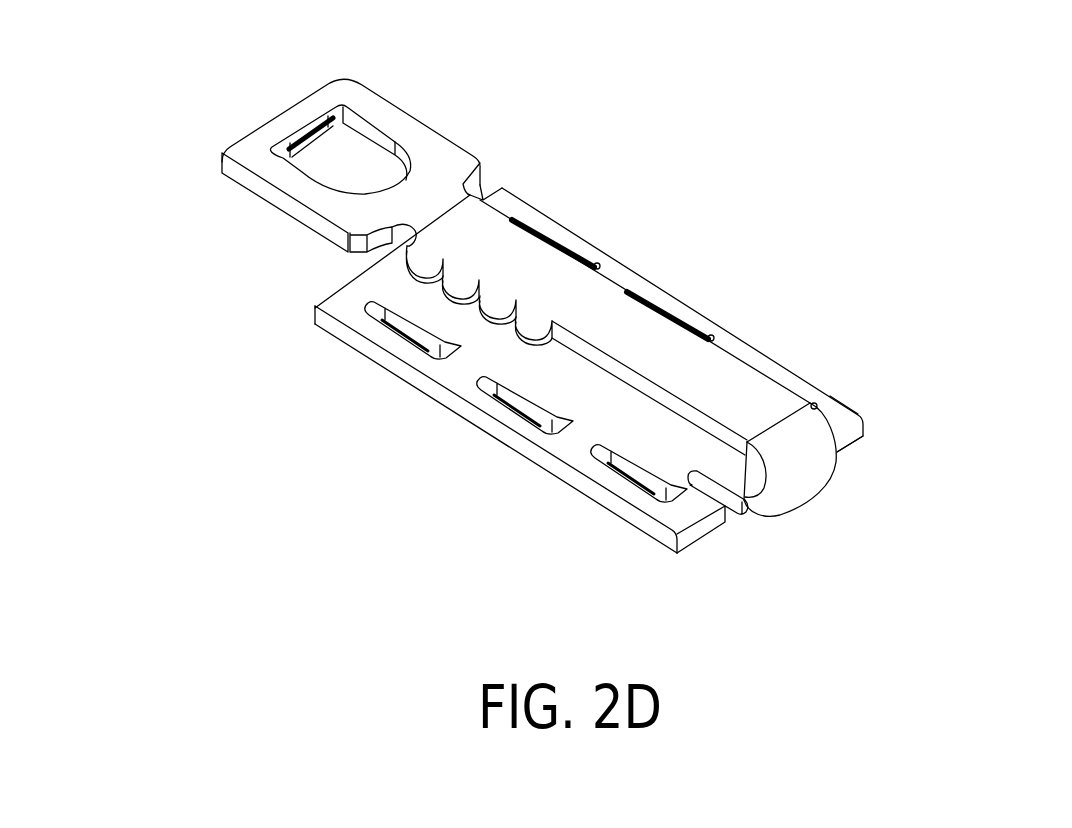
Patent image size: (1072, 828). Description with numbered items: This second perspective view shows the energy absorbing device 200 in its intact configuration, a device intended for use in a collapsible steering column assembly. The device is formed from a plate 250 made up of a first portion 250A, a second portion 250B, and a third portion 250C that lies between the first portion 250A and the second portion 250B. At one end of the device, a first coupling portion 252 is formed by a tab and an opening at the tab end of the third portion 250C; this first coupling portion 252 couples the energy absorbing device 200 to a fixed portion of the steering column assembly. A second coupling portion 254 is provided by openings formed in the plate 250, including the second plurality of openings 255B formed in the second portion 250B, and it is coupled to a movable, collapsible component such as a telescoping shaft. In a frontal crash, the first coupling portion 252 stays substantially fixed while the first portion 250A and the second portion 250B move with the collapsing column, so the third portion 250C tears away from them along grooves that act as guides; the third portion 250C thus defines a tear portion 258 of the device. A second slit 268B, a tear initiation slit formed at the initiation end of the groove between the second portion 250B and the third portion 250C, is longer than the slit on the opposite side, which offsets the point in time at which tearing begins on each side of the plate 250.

The energy absorbing device 200 is at (541, 121).
The plate 250 is at (345, 267).
The first coupling portion 252 is at (406, 82).
The first portion 250A is at (643, 294).
The second portion 250B is at (462, 382).
The third portion 250C is at (808, 460).
The second coupling portion 254 is at (330, 306).
The second plurality of openings 255B is at (408, 335).
The tear portion 258 is at (857, 501).
The second slit 268B is at (738, 525).